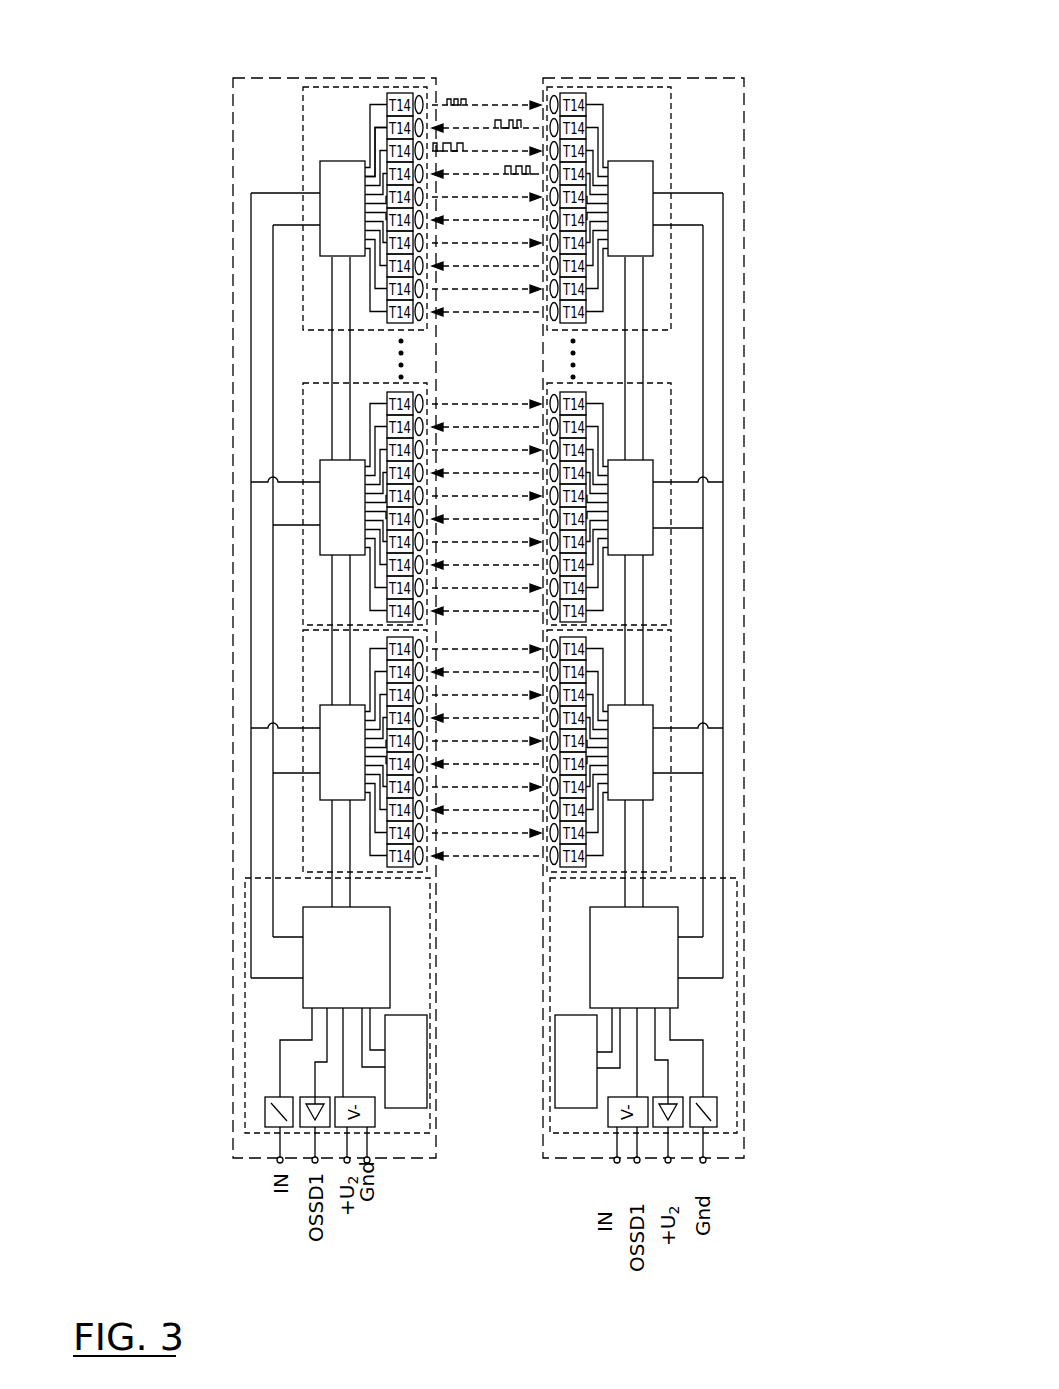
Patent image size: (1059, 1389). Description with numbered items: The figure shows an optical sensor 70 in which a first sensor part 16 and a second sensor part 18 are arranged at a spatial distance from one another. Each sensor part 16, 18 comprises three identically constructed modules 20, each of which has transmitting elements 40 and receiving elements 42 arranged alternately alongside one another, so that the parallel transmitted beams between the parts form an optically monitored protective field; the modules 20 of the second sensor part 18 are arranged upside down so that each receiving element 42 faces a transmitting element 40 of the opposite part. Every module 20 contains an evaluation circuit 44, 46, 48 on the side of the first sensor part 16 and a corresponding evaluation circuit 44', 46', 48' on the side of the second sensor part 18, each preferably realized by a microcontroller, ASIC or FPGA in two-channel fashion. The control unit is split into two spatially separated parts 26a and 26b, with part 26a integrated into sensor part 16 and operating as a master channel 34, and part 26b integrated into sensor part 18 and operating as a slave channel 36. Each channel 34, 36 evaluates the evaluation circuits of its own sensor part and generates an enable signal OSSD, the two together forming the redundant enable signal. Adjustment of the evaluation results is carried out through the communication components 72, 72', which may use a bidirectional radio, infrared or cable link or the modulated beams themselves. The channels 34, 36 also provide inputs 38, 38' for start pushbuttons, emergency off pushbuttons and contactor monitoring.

The first sensor part 16 is at (258, 95).
The second sensor part 18 is at (744, 130).
The module 20 is at (303, 122).
The control unit part 26a is at (245, 1003).
The control unit part 26b is at (738, 1010).
The master channel 34 is at (390, 945).
The slave channel 36 is at (592, 920).
The input 38 is at (285, 1165).
The input 38' is at (708, 1162).
The transmitting element 40 is at (405, 93).
The receiving element 42 is at (387, 124).
The evaluation circuit 44 is at (381, 167).
The evaluation circuit 44' is at (619, 179).
The evaluation circuit 46 is at (300, 507).
The evaluation circuit 46' is at (676, 507).
The evaluation circuit 48 is at (301, 752).
The evaluation circuit 48' is at (679, 752).
The sensor 70 is at (748, 58).
The communication component 72 is at (435, 1086).
The communication component 72' is at (543, 1061).